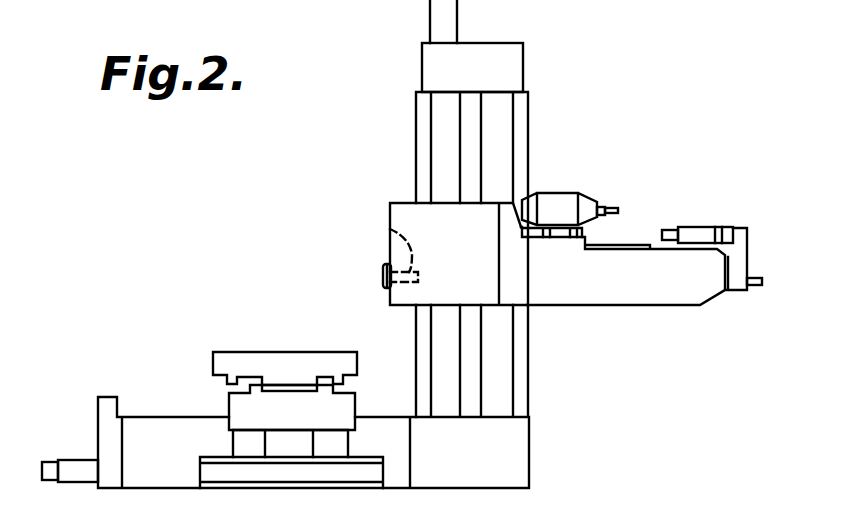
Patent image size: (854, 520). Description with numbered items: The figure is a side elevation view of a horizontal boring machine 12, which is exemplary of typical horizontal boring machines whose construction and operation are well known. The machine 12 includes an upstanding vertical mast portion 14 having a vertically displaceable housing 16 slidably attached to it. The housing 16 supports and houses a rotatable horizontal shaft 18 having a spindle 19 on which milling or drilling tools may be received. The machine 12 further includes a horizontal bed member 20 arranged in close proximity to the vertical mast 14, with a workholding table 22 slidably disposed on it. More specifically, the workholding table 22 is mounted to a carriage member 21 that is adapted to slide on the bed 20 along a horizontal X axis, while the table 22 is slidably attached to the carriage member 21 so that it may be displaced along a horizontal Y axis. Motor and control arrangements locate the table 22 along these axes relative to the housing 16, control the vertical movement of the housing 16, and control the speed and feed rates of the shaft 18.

The horizontal boring machine 12 is at (560, 351).
The vertical mast portion 14 is at (498, 132).
The housing 16 is at (468, 241).
The horizontal shaft 18 is at (390, 229).
The spindle 19 is at (382, 277).
The horizontal bed member 20 is at (165, 442).
The carriage member 21 is at (300, 422).
The workholding table 22 is at (278, 360).